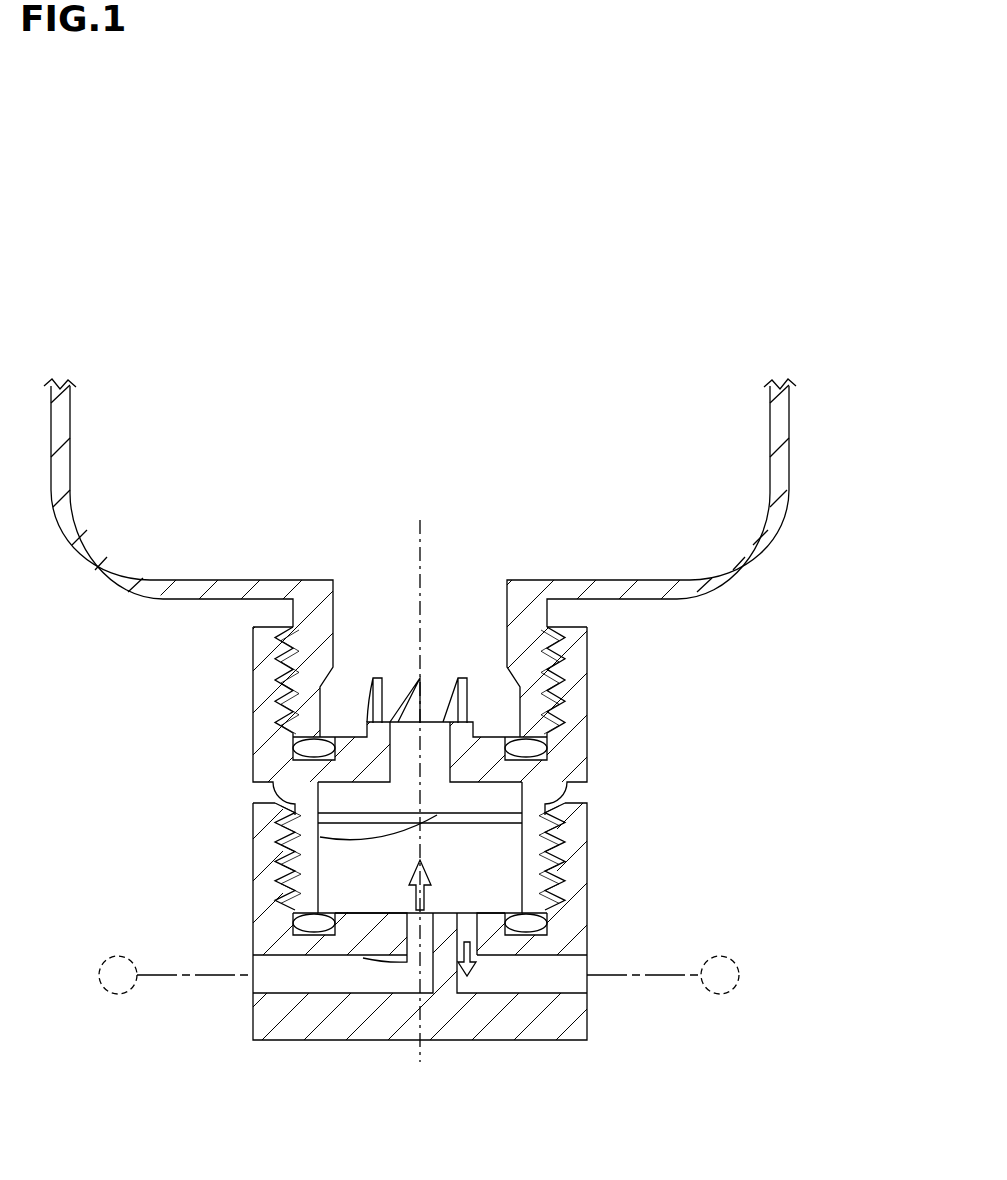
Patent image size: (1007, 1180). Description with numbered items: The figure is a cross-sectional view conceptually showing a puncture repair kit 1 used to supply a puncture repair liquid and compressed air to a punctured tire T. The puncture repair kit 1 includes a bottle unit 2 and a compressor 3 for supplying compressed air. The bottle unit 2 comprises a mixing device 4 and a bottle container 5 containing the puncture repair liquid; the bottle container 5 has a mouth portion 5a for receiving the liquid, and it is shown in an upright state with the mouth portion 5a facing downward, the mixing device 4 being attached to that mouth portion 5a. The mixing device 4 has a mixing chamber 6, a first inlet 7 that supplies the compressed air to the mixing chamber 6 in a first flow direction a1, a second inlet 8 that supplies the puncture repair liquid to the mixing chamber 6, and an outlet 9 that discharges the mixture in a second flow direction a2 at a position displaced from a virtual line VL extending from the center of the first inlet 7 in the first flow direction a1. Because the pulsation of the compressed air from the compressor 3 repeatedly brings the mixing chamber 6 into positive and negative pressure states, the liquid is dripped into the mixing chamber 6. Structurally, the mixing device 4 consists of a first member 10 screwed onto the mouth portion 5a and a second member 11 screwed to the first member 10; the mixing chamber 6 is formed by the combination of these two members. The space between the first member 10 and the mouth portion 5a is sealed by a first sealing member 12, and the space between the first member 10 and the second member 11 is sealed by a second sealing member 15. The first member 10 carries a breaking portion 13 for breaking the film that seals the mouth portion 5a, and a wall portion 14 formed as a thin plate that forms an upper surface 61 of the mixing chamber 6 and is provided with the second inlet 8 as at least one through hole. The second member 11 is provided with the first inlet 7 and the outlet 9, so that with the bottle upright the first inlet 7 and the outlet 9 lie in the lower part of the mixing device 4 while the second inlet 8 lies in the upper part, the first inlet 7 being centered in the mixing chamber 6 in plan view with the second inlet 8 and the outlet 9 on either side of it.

The puncture repair kit 1 is at (774, 214).
The bottle unit 2 is at (812, 610).
The compressor 3 is at (104, 989).
The mixing device 4 is at (765, 885).
The bottle container 5 is at (730, 575).
The mouth portion 5a is at (310, 650).
The mixing chamber 6 is at (458, 848).
The first inlet 7 is at (423, 913).
The second inlet 8 is at (423, 833).
The outlet 9 is at (470, 912).
The first member 10 is at (268, 730).
The second member 11 is at (268, 925).
The first sealing member 12 is at (310, 750).
The breaking portion 13 is at (368, 700).
The wall portion 14 is at (362, 815).
The second sealing member 15 is at (308, 925).
The upper surface 61 is at (320, 837).
The first flow direction a1 is at (407, 882).
The second flow direction a2 is at (460, 977).
The tire T is at (735, 990).
The virtual line VL is at (420, 537).